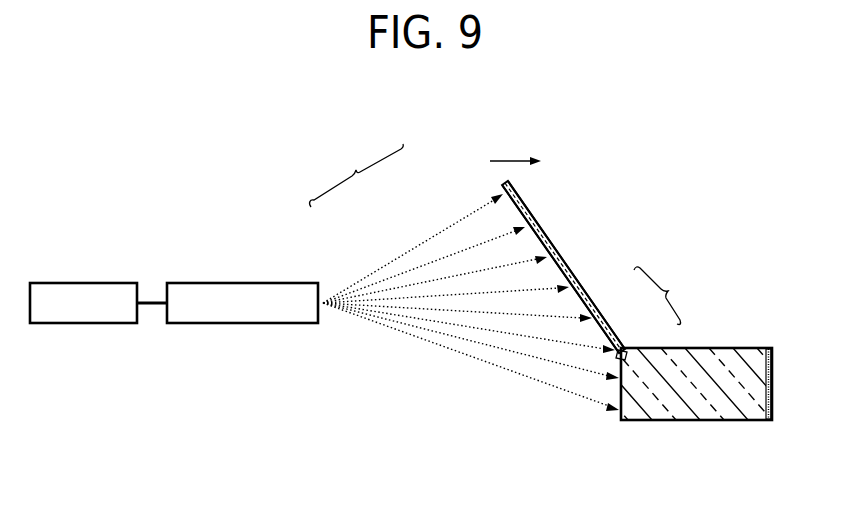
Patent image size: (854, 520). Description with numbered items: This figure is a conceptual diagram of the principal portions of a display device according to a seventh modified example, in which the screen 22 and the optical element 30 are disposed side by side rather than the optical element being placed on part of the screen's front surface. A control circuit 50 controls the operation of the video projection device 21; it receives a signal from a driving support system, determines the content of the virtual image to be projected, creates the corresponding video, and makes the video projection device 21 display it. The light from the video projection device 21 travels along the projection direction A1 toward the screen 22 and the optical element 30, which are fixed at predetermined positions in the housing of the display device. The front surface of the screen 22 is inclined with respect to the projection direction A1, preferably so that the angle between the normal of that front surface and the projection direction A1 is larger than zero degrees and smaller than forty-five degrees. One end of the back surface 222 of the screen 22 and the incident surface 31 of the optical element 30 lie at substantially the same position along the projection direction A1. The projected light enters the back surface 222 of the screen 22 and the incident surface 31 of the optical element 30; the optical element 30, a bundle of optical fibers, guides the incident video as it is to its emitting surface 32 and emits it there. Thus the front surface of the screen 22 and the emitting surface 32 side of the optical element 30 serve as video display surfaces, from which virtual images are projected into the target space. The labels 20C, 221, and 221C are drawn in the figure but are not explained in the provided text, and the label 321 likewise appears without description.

The control circuit 50 is at (80, 283).
The video projection device 21 is at (296, 283).
The projection unit 20C is at (357, 175).
The screen 22 is at (503, 183).
The back surface of screen 222 is at (516, 205).
The back surface of mirror 221 is at (582, 289).
The mirror unit 221C is at (678, 296).
The projection direction A1 is at (515, 149).
The incident surface 31 is at (626, 350).
The optical element 30 is at (695, 430).
The emitting surface 32 is at (773, 398).
The display surface 321 is at (773, 372).